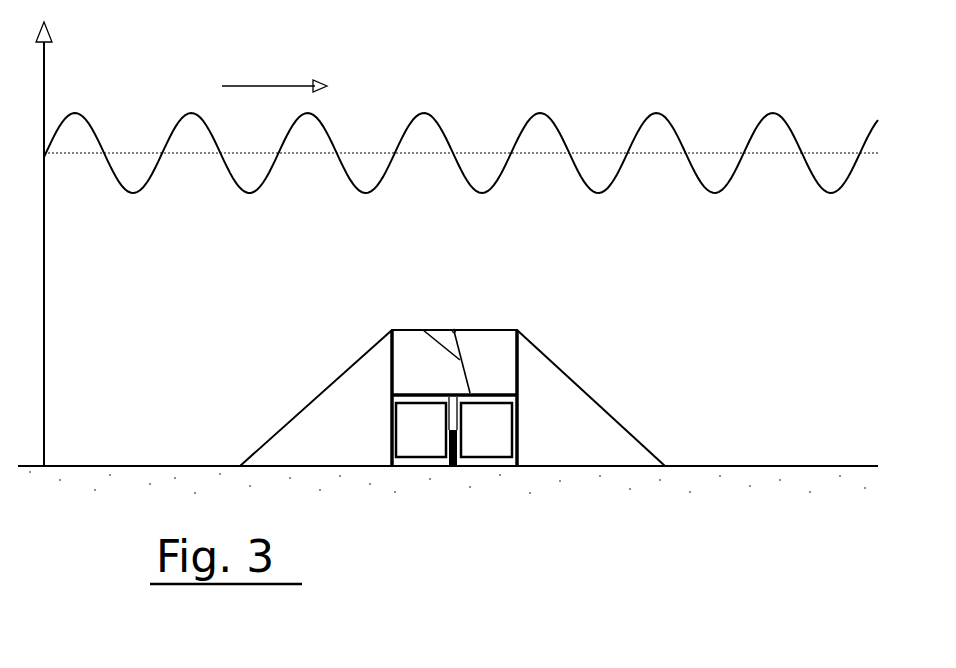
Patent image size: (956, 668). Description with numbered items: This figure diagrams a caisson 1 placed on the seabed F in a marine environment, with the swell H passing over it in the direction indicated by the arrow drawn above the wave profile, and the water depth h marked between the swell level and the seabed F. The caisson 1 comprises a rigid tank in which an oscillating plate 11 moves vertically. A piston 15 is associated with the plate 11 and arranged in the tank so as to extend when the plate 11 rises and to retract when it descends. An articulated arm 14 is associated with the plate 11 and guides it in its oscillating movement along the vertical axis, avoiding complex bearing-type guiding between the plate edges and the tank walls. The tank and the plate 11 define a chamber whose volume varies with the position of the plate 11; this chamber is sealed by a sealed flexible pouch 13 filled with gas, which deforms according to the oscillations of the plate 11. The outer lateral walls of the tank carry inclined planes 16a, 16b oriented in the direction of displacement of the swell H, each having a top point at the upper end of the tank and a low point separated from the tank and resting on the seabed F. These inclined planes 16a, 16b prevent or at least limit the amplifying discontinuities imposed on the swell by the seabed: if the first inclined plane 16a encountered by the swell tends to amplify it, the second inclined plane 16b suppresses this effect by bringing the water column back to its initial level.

The caisson 1 is at (511, 324).
The oscillating plate 11 is at (421, 391).
The sealed flexible pouch 13 is at (427, 424).
The articulated arm 14 is at (440, 331).
The piston 15 is at (452, 469).
The first inclined plane 16a is at (313, 398).
The second inclined plane 16b is at (597, 400).
The seabed F is at (747, 466).
The swell H is at (84, 112).
The depth h is at (134, 160).